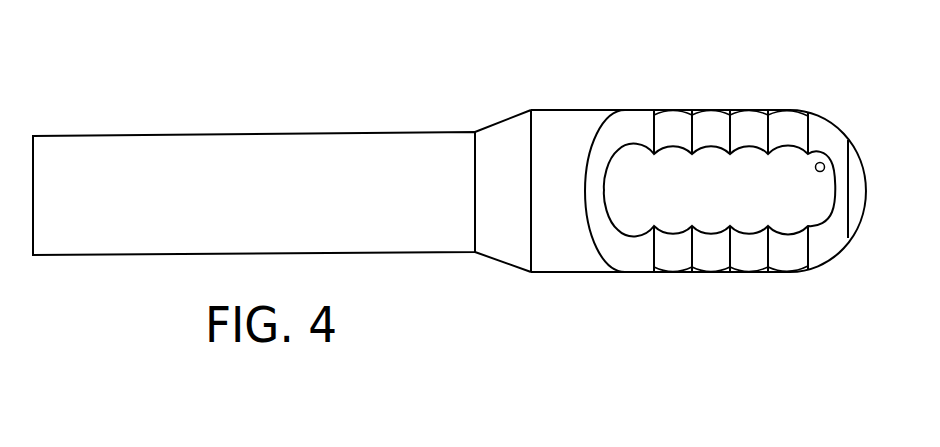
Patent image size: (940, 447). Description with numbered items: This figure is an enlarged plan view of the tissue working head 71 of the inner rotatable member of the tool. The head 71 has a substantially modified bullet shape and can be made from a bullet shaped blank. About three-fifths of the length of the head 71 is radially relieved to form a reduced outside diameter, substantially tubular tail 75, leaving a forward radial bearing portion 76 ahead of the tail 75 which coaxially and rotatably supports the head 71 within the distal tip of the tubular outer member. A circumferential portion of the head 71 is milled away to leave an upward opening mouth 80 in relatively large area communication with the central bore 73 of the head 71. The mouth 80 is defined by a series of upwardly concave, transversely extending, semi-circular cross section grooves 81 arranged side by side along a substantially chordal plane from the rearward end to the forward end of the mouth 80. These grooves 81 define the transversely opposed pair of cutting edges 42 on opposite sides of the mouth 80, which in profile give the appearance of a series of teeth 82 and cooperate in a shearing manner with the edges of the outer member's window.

The tissue working head 71 is at (436, 284).
The tail 75 is at (337, 184).
The forward radial bearing portion 76 is at (555, 110).
The teeth 82 is at (693, 128).
The grooves 81 is at (780, 172).
The cutting edges 42 is at (715, 120).
The central bore 73 is at (795, 108).
The mouth 80 is at (827, 162).